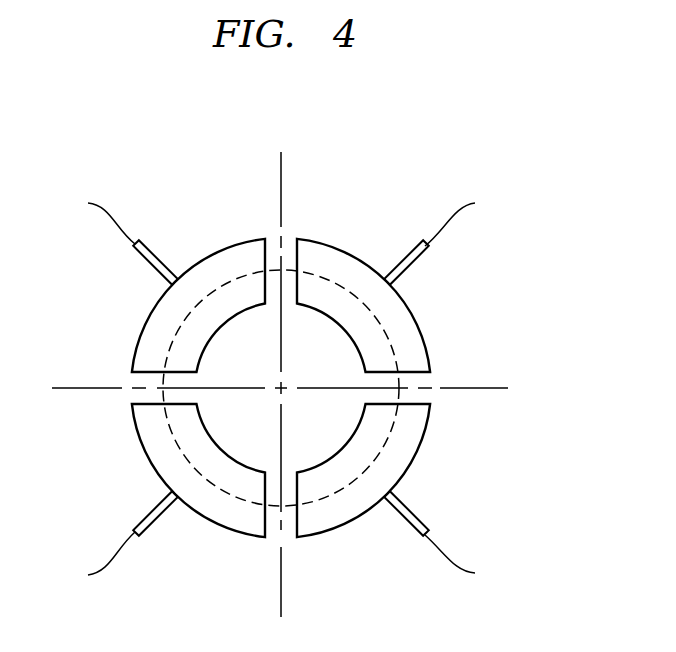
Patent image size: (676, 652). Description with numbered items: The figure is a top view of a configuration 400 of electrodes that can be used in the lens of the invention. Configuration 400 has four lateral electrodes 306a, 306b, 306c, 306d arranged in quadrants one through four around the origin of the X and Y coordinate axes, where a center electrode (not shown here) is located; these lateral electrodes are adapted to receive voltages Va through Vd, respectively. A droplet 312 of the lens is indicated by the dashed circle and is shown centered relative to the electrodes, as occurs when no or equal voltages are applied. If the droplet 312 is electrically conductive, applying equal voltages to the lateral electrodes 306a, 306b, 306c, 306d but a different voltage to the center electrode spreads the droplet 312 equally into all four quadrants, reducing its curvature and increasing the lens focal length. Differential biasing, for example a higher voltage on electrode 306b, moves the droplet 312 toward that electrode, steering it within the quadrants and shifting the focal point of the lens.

The configuration 400 is at (299, 90).
The lateral electrode 306a is at (328, 262).
The lateral electrode 306b is at (233, 262).
The lateral electrode 306c is at (233, 513).
The lateral electrode 306d is at (328, 513).
The droplet 312 is at (393, 347).